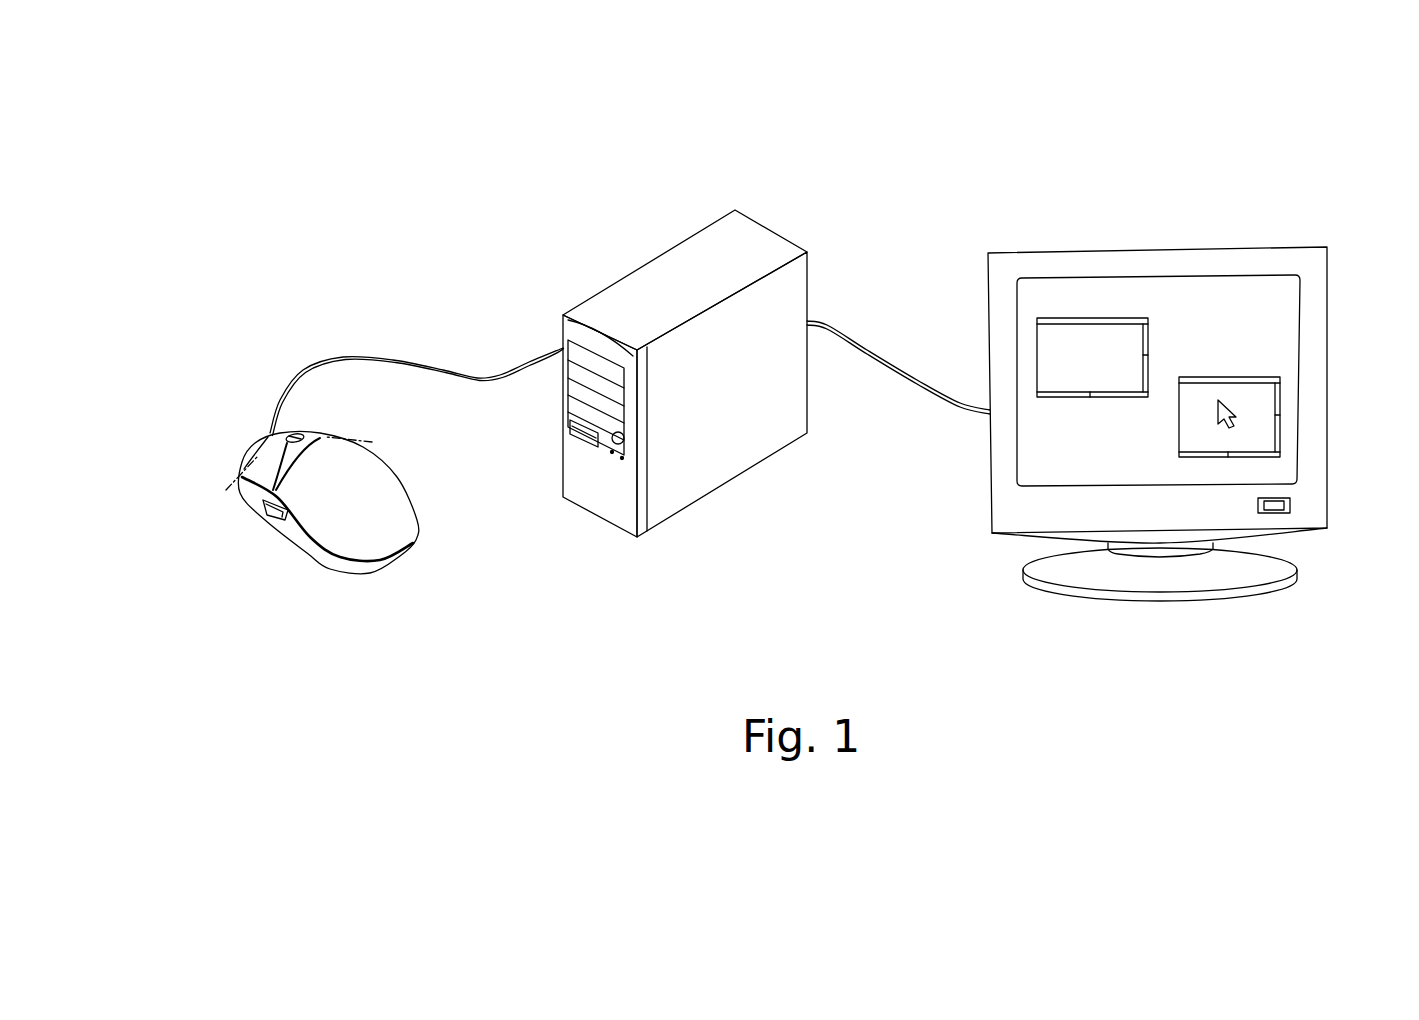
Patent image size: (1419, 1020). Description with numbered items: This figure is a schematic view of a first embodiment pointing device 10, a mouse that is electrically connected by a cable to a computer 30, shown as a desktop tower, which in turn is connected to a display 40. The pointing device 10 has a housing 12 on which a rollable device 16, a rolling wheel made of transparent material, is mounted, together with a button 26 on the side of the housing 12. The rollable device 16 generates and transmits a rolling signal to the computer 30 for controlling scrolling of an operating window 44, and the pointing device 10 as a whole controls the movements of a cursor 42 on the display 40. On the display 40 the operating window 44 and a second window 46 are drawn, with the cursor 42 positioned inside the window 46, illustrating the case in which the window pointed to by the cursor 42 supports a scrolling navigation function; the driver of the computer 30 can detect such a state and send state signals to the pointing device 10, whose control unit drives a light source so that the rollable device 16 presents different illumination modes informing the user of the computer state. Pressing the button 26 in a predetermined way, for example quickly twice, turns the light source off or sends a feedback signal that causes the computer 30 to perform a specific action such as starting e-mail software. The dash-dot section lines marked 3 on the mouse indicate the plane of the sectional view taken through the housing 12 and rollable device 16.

The pointing device 10 is at (236, 356).
The housing 12 is at (343, 527).
The rollable device 16 is at (290, 437).
The button 26 is at (266, 505).
The section line for FIG. 3 is at (372, 432).
The computer 30 is at (668, 285).
The display 40 is at (1251, 205).
The cursor 42 is at (1238, 423).
The operating window 44 is at (1057, 343).
The window 46 is at (1237, 388).